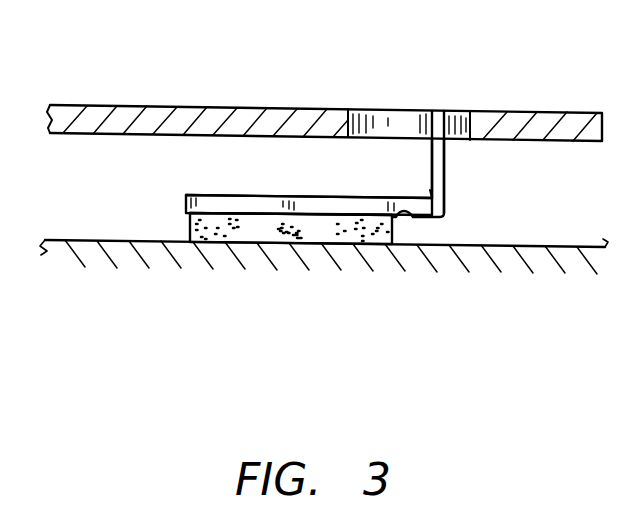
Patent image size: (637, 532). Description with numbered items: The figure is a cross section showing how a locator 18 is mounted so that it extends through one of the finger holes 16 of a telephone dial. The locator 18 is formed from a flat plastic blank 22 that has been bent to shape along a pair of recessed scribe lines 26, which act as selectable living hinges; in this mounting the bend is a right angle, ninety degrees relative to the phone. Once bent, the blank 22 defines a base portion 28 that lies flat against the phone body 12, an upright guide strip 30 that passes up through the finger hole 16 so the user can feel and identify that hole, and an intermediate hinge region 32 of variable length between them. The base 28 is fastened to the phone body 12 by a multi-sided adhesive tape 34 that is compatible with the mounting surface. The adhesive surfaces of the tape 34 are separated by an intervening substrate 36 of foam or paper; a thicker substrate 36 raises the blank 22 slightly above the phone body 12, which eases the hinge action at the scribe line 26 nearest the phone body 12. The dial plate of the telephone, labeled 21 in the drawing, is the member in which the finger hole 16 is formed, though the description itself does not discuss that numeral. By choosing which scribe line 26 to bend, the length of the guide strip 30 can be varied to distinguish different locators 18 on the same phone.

The phone body 12 is at (547, 246).
The finger hole 16 is at (383, 112).
The locator 18 is at (441, 113).
The panel 21 is at (168, 105).
The blank 22 is at (190, 195).
The scribe lines 26 is at (405, 220).
The base portion 28 is at (238, 196).
The guide strip 30 is at (446, 183).
The intermediate hinge region 32 is at (430, 196).
The adhesive tape 34 is at (190, 222).
The substrate 36 is at (266, 243).